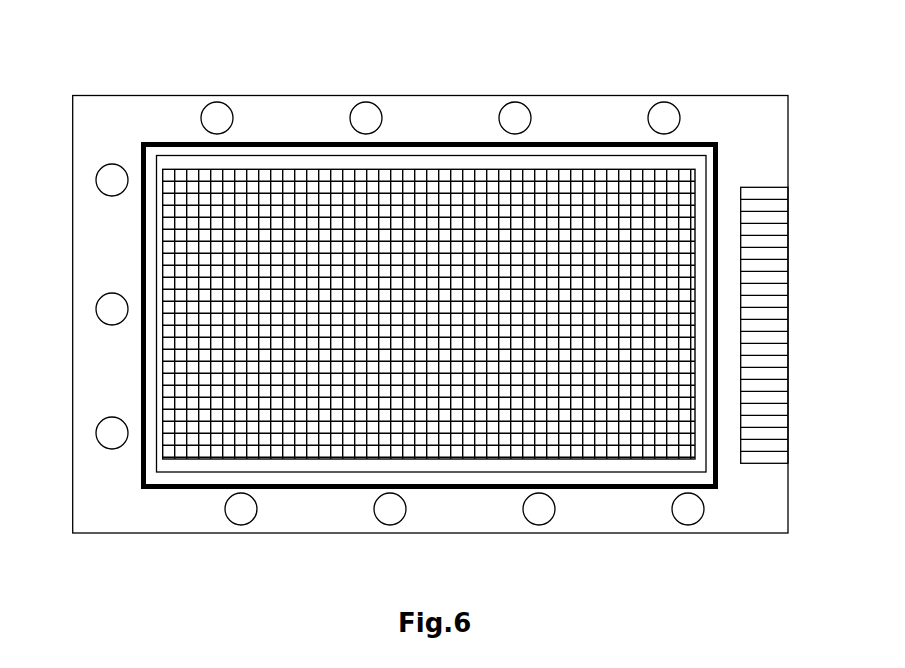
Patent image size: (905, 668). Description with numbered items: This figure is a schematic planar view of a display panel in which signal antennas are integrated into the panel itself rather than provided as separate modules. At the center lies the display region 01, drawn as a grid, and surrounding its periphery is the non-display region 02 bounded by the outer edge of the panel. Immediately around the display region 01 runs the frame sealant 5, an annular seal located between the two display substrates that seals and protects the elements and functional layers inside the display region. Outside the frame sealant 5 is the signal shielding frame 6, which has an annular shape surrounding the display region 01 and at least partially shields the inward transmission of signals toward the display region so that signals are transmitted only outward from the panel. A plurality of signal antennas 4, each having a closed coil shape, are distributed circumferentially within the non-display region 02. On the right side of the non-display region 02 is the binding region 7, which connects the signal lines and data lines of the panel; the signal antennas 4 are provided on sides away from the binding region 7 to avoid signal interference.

The display region 01 is at (554, 211).
The non-display region 02 is at (760, 135).
The signal antennas 4 is at (110, 183).
The frame sealant 5 is at (254, 157).
The signal shielding frame 6 is at (407, 143).
The binding region 7 is at (763, 339).